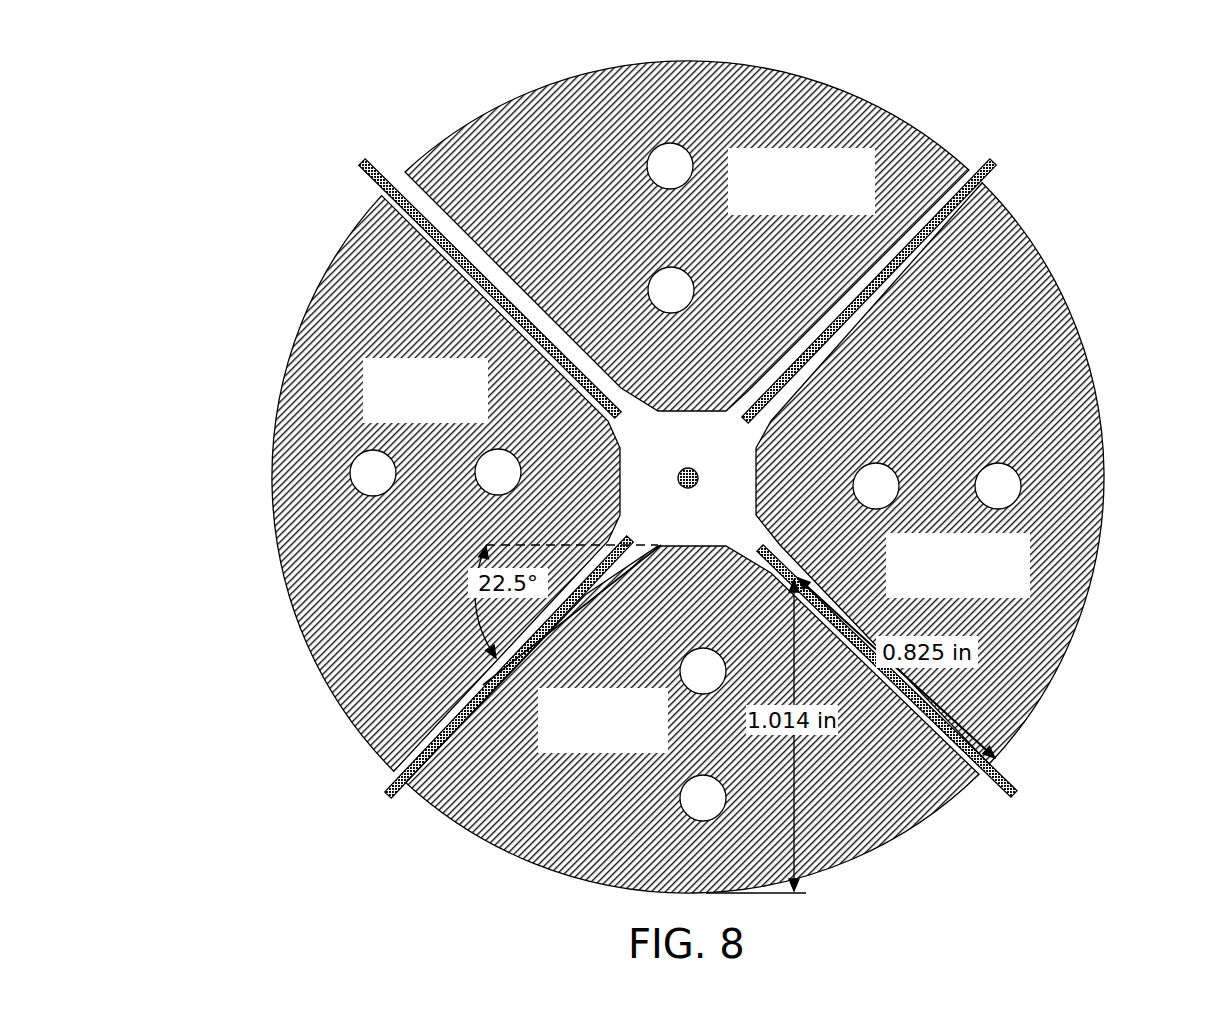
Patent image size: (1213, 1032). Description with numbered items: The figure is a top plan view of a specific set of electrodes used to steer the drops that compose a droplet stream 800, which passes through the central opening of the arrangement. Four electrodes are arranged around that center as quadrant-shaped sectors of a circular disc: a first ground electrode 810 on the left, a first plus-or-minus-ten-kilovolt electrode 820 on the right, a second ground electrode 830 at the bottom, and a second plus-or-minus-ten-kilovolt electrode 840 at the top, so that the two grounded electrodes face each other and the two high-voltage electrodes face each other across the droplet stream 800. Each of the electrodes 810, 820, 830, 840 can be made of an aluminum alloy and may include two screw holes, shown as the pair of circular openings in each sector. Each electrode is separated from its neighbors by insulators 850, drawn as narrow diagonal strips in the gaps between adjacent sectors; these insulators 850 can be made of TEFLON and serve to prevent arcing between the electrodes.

The droplet stream 800 is at (668, 478).
The first ground electrode 810 is at (318, 282).
The first ±10 kV electrode 820 is at (1060, 470).
The second ground electrode 830 is at (522, 855).
The second ±10 kV electrode 840 is at (820, 88).
The insulators 850 is at (373, 153).